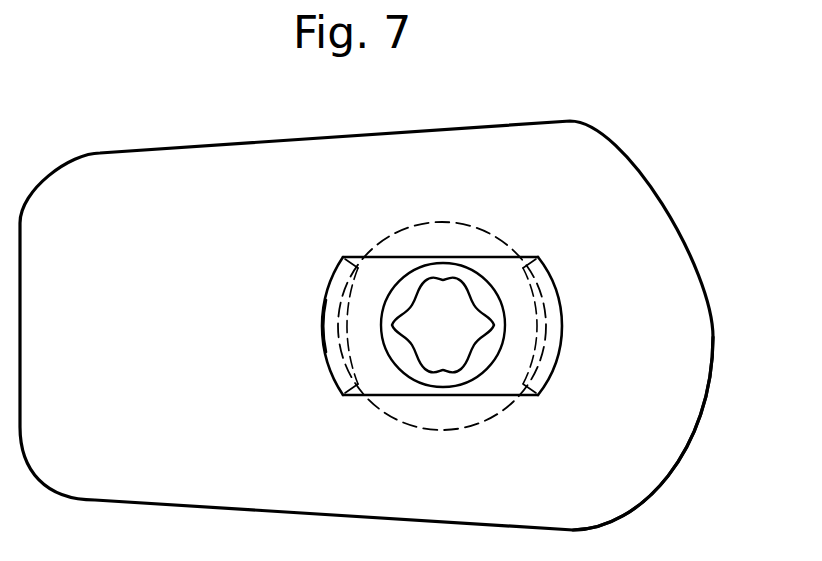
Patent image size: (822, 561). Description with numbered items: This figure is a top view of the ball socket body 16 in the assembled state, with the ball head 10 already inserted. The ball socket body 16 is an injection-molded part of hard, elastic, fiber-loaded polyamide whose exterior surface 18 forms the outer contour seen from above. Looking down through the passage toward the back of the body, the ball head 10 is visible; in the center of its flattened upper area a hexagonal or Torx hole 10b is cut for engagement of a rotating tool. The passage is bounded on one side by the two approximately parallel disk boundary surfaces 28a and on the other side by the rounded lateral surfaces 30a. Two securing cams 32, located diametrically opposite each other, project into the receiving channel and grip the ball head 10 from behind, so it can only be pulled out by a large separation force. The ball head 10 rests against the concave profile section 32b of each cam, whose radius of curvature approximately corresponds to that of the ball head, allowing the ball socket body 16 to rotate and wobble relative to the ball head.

The ball head 10 is at (497, 275).
The Torx hole 10b is at (427, 297).
The ball socket body 16 is at (685, 283).
The exterior surface 18 is at (711, 367).
The disk boundary surfaces 28a is at (397, 388).
The rounded lateral surfaces 30a is at (332, 347).
The securing cams 32 is at (546, 371).
The concave profile section 32b is at (337, 283).